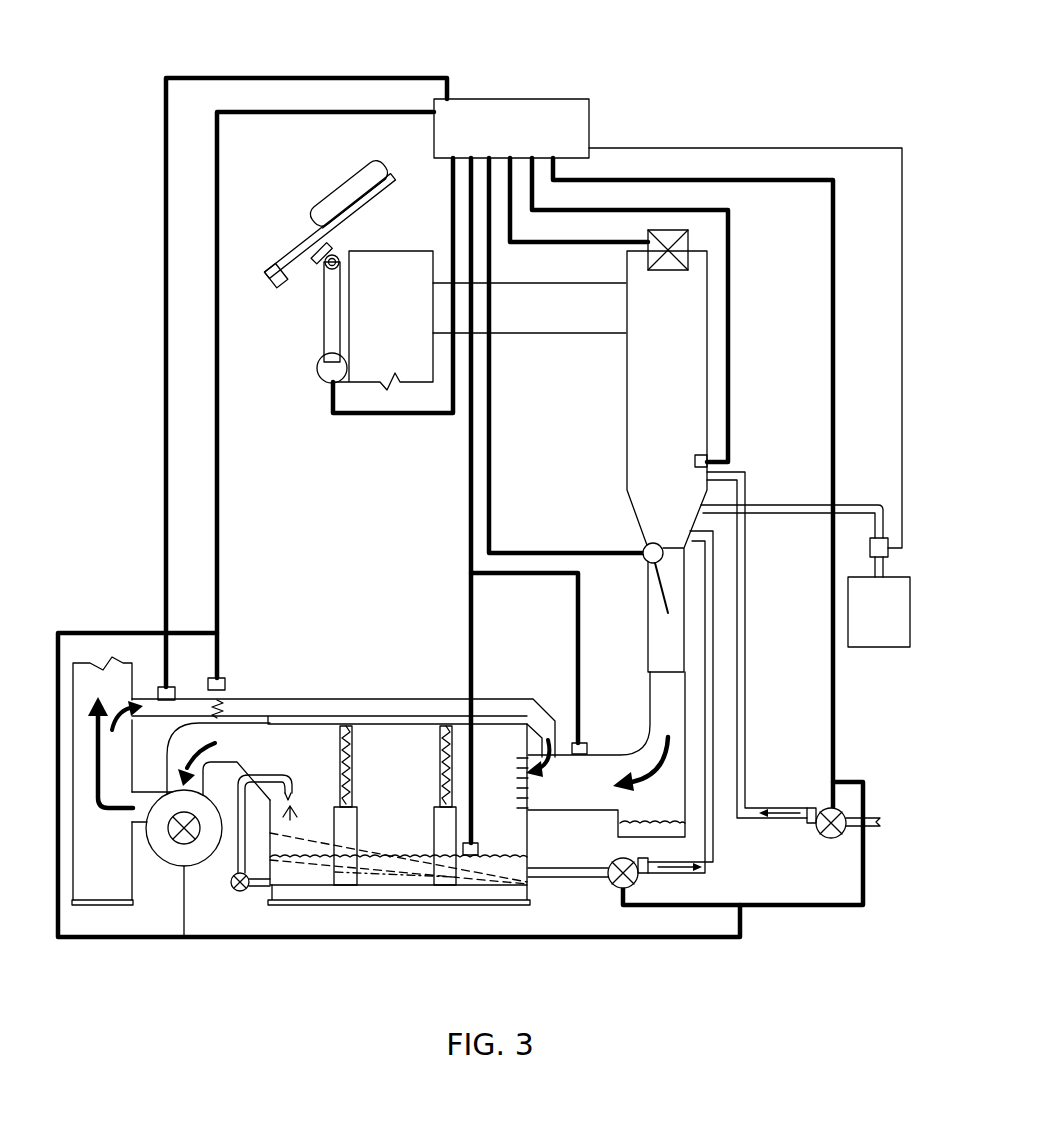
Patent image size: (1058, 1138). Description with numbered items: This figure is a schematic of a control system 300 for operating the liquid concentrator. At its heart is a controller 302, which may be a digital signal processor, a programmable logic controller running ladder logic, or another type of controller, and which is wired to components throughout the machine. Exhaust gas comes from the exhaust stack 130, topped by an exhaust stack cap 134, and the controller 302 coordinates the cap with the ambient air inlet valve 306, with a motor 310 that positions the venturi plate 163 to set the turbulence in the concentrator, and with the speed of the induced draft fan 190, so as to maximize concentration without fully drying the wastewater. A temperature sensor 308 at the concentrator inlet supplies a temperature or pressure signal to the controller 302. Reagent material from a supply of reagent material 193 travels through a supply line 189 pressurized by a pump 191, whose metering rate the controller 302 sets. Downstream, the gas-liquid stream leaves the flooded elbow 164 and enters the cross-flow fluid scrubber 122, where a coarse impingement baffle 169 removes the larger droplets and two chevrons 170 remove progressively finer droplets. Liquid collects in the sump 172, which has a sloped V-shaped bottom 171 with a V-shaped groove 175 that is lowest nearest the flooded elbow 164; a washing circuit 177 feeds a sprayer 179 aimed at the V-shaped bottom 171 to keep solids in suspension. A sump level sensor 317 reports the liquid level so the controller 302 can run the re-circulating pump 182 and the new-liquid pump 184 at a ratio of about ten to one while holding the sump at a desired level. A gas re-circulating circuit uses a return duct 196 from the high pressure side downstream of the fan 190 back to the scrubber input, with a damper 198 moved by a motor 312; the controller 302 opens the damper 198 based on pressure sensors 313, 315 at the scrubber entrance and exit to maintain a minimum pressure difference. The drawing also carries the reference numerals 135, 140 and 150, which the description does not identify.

The control system 300 is at (675, 95).
The controller 302 is at (512, 98).
The exhaust stack cap 134 is at (362, 187).
The pedal sensor 135 is at (321, 380).
The exhaust stack 130 is at (383, 320).
The cabinet interface 140 is at (529, 308).
The additive hopper 150 is at (667, 461).
The ambient air inlet valve 306 is at (668, 272).
The temperature sensor 308 is at (695, 461).
The motor 310 is at (644, 547).
The venturi plate 163 is at (663, 592).
The flooded elbow 164 is at (621, 732).
The pressure sensor 315 is at (568, 738).
The pump 182 is at (610, 860).
The pump 184 is at (831, 840).
The supply line 189 is at (868, 502).
The pump 191 is at (880, 549).
The supply of reagent material 193 is at (893, 648).
The return duct 196 is at (385, 699).
The pressure sensor 313 is at (161, 685).
The motor 312 is at (226, 680).
The damper 198 is at (228, 700).
The induced draft fan 190 is at (167, 850).
The fluid scrubber 122 is at (493, 838).
The coarse impingement baffle 169 is at (517, 808).
The V-shaped bottom 171 is at (303, 838).
The V-shaped groove 175 is at (323, 865).
The sump 172 is at (393, 878).
The chevrons 170 is at (440, 770).
The sump level sensor 317 is at (471, 858).
The sprayer 179 is at (290, 790).
The washing circuit 177 is at (230, 897).